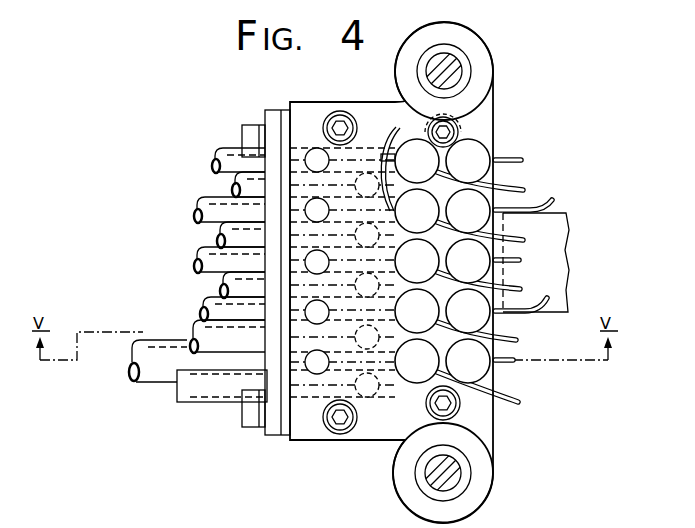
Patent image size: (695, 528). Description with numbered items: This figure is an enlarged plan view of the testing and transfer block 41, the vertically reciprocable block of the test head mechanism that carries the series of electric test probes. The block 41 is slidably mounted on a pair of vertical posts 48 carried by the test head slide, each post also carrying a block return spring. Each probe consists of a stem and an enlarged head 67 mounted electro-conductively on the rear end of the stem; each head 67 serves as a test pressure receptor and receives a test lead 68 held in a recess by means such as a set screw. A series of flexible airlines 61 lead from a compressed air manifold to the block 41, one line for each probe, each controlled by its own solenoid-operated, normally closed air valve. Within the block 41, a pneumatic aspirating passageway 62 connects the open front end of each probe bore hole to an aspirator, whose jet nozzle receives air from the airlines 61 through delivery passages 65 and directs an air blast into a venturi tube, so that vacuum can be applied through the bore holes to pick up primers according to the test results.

The testing and transfer block 41 is at (360, 440).
The vertical posts 48 is at (453, 63).
The flexible airlines 61 is at (156, 343).
The pneumatic aspirating passageway 62 is at (392, 272).
The delivery passages 65 is at (205, 213).
The enlarged head 67 is at (476, 152).
The test lead 68 is at (523, 182).